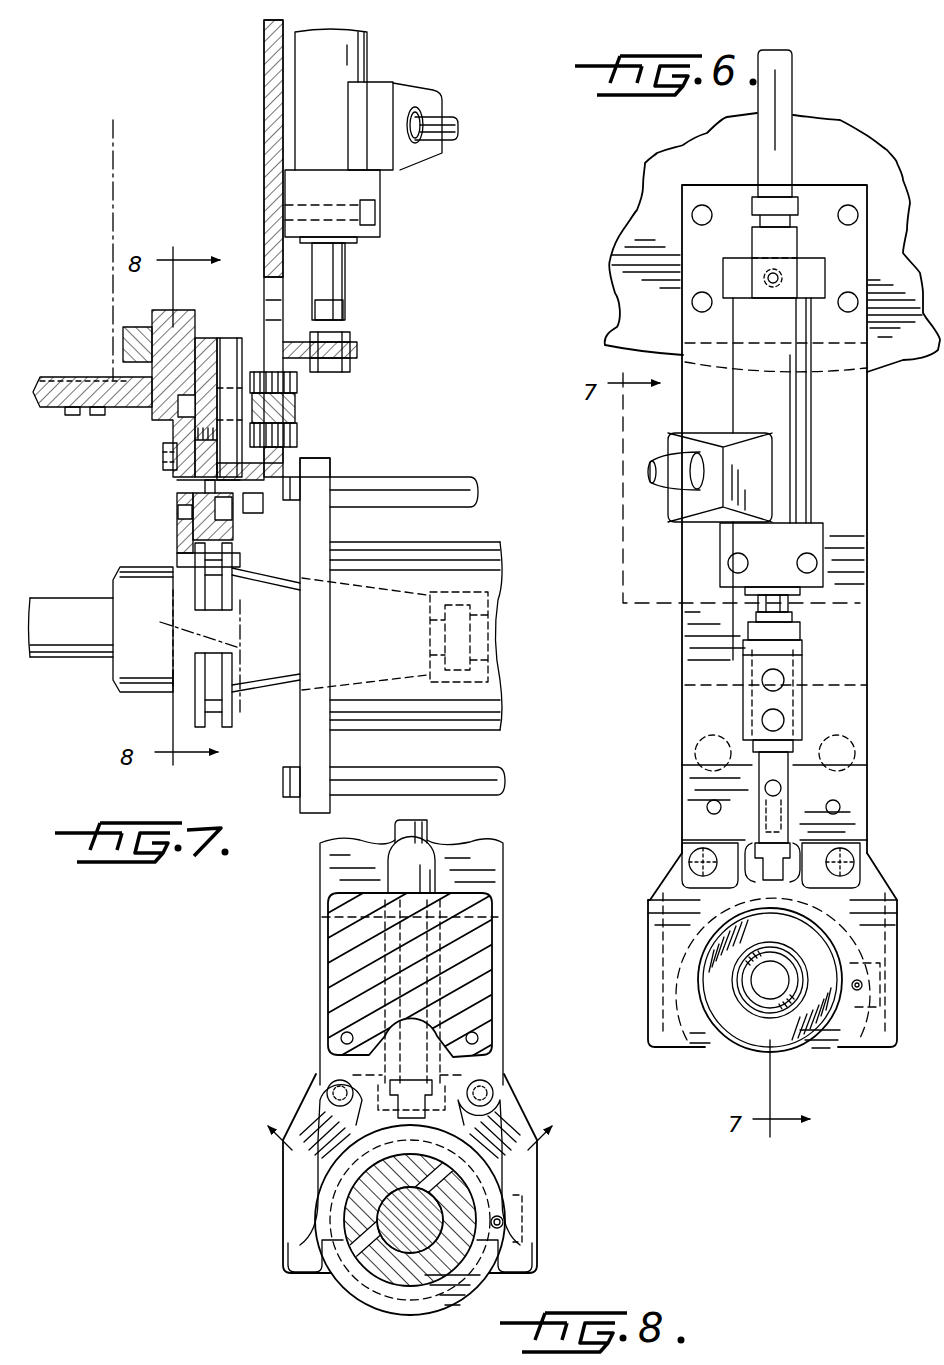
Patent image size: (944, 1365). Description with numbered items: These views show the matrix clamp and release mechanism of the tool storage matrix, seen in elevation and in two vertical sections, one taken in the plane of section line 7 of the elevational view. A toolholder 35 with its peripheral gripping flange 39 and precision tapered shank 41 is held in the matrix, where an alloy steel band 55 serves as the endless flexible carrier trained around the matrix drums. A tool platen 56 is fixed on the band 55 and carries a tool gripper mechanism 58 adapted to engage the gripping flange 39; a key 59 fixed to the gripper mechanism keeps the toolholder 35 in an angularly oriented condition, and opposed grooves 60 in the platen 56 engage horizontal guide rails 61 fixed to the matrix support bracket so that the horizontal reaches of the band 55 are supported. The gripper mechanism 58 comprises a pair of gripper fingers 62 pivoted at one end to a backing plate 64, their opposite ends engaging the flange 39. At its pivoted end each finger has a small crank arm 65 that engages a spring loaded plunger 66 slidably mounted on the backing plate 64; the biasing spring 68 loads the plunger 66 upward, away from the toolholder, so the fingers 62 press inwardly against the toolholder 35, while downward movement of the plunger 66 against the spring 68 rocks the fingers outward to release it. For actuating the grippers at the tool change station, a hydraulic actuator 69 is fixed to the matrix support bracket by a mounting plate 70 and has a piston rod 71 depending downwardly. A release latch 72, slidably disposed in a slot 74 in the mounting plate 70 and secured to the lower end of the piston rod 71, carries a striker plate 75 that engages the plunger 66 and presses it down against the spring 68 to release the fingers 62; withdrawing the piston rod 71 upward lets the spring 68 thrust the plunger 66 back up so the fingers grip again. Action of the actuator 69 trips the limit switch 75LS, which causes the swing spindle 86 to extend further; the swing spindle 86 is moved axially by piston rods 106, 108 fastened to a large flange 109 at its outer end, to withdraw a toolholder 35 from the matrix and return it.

In FIG. 7, the shaft 7 is at (55, 598).
In FIG. 7, the toolholder 35 is at (113, 675).
In FIG. 8, the toolholder 35 is at (370, 1278).
In FIG. 6, the peripheral gripping flange 39 is at (823, 1050).
In FIG. 7, the peripheral gripping flange 39 is at (185, 705).
In FIG. 8, the peripheral gripping flange 39 is at (400, 1313).
In FIG. 6, the precision tapered shank 41 is at (748, 1043).
In FIG. 7, the precision tapered shank 41 is at (260, 693).
In FIG. 7, the alloy steel band 55 is at (45, 378).
In FIG. 7, the tool platen 56 is at (72, 410).
In FIG. 8, the tool platen 56 is at (328, 990).
In FIG. 6, the tool gripper mechanism 58 is at (635, 900).
In FIG. 7, the tool gripper mechanism 58 is at (152, 513).
In FIG. 8, the tool gripper mechanism 58 is at (298, 1101).
In FIG. 7, the key 59 is at (175, 626).
In FIG. 8, the key 59 is at (490, 1200).
In FIG. 7, the groove 60 is at (160, 325).
In FIG. 7, the horizontal guide rail 61 is at (123, 335).
In FIG. 7, the gripper finger 62 is at (177, 540).
In FIG. 8, the gripper finger 62 is at (288, 1243).
In FIG. 6, the backing plate 64 is at (685, 797).
In FIG. 7, the backing plate 64 is at (226, 335).
In FIG. 6, the crank arm 65 is at (717, 840).
In FIG. 7, the crank arm 65 is at (255, 537).
In FIG. 6, the spring loaded plunger 66 is at (800, 822).
In FIG. 7, the spring loaded plunger 66 is at (307, 473).
In FIG. 6, the biasing spring 68 is at (762, 888).
In FIG. 7, the biasing spring 68 is at (220, 497).
In FIG. 6, the hydraulic actuator 69 is at (813, 417).
In FIG. 7, the hydraulic actuator 69 is at (367, 50).
In FIG. 6, the mounting plate 70 is at (853, 533).
In FIG. 7, the mounting plate 70 is at (264, 100).
In FIG. 8, the mounting plate 70 is at (328, 880).
In FIG. 6, the piston rod 71 is at (790, 603).
In FIG. 7, the piston rod 71 is at (350, 280).
In FIG. 8, the piston rod 71 is at (432, 838).
In FIG. 6, the release latch 72 is at (802, 708).
In FIG. 7, the release latch 72 is at (297, 412).
In FIG. 7, the slot 74 is at (352, 338).
In FIG. 8, the slot 74 is at (440, 862).
In FIG. 6, the striker plate 75 is at (790, 775).
In FIG. 7, the striker plate 75 is at (283, 462).
In FIG. 6, the limit switch 75LS is at (760, 475).
In FIG. 7, the limit switch 75LS is at (385, 90).
In FIG. 7, the swing spindle 86 is at (470, 545).
In FIG. 7, the piston rod 106 is at (410, 478).
In FIG. 7, the piston rod 108 is at (470, 770).
In FIG. 7, the flange 109 is at (322, 530).